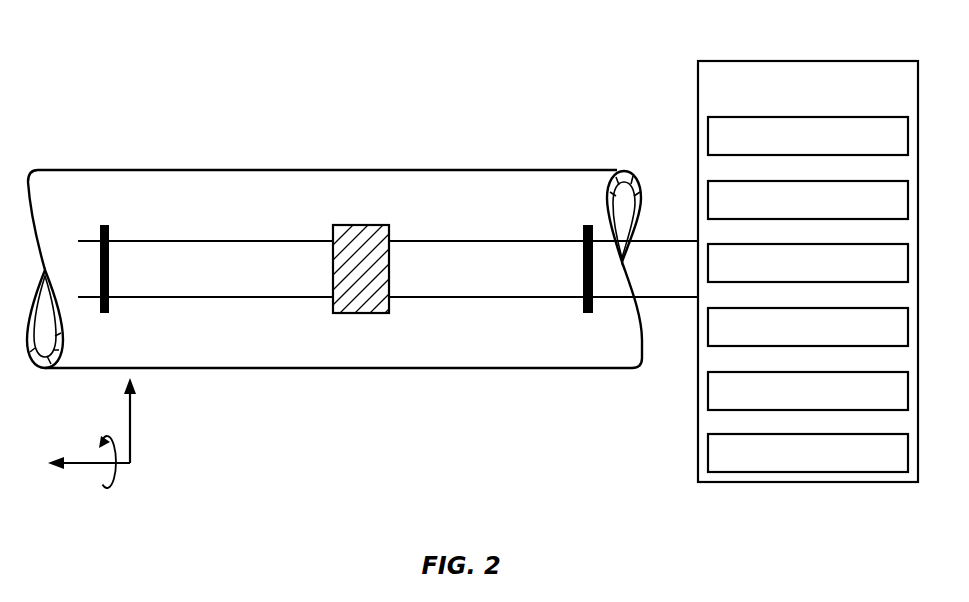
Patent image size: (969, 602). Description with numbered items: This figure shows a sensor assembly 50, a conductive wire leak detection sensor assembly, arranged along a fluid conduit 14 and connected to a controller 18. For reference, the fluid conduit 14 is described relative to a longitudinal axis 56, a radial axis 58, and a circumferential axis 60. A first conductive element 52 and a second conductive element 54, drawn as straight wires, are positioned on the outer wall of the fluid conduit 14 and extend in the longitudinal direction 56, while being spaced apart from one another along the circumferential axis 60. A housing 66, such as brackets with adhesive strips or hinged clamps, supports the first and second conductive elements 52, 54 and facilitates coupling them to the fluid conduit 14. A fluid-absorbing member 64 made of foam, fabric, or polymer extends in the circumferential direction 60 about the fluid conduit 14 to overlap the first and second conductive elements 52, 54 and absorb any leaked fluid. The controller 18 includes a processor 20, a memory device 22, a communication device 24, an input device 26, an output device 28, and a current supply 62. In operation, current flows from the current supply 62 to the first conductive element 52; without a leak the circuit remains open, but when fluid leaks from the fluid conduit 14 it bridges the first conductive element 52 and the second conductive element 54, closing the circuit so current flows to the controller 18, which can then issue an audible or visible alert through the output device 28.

The fluid conduit 14 is at (334, 170).
The controller 18 is at (806, 61).
The processor 20 is at (814, 117).
The memory device 22 is at (814, 181).
The communication device 24 is at (814, 244).
The input device 26 is at (814, 308).
The output device 28 is at (814, 372).
The sensor assembly 50 is at (318, 48).
The first conductive element 52 is at (238, 241).
The second conductive element 54 is at (238, 297).
The longitudinal axis 56 is at (80, 462).
The radial axis 58 is at (131, 420).
The circumferential axis 60 is at (107, 488).
The current supply 62 is at (814, 434).
The fluid-absorbing member 64 is at (362, 225).
The housing 66 is at (104, 225).